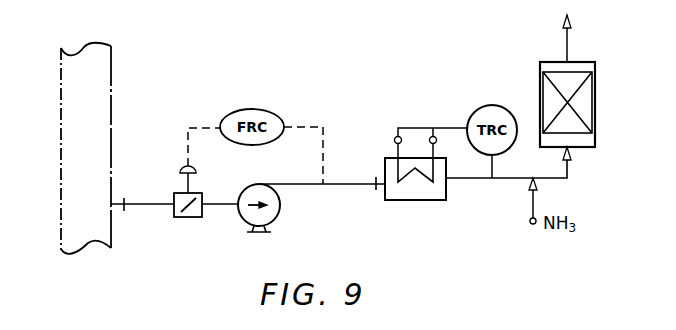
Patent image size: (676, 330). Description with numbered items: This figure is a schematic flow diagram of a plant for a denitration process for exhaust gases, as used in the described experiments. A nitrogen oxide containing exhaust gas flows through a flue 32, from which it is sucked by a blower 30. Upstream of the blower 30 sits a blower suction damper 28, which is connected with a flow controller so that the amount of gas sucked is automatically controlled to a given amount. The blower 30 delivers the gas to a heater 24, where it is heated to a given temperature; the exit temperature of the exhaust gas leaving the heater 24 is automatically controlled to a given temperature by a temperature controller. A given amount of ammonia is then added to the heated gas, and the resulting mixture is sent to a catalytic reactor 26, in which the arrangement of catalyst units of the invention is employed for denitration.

The heater 24 is at (406, 200).
The catalytic reactor 26 is at (595, 110).
The blower suction damper 28 is at (189, 218).
The blower 30 is at (280, 212).
The flue 32 is at (62, 181).